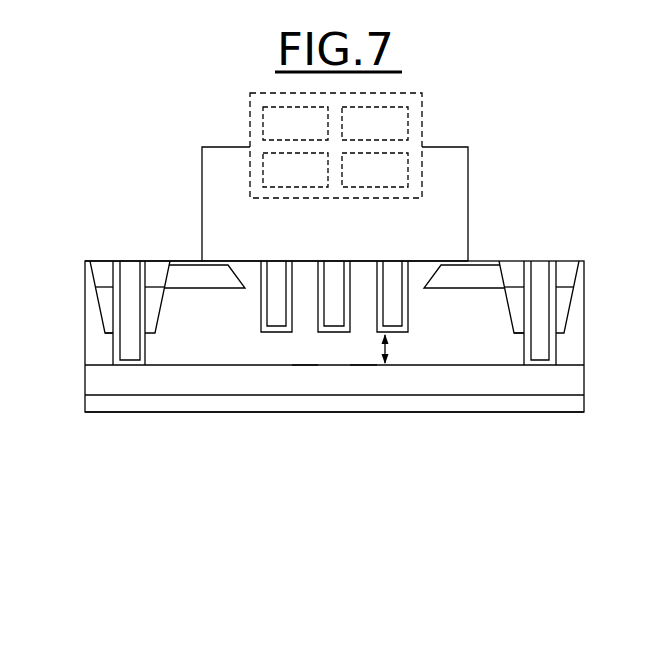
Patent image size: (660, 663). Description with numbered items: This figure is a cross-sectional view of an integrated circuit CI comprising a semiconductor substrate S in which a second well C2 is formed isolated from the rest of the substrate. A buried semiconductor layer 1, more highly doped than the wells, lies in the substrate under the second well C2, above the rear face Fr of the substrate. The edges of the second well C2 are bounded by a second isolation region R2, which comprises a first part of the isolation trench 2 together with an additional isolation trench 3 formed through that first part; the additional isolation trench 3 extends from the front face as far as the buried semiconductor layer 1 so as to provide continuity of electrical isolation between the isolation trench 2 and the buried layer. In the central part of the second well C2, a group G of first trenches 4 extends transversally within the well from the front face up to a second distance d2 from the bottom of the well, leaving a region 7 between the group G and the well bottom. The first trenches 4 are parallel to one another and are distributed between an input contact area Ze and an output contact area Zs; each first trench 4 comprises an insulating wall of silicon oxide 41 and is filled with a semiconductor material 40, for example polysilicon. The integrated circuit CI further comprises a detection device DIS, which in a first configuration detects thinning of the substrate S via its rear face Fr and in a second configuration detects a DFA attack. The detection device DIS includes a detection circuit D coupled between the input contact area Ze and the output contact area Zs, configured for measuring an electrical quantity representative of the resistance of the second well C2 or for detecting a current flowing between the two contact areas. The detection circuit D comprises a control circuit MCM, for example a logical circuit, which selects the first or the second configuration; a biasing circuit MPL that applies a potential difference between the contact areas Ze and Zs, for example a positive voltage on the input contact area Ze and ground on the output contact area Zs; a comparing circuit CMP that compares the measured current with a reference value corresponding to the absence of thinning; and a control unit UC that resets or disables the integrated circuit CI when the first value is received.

The buried semiconductor layer 1 is at (150, 380).
The isolation trench 2 is at (334, 297).
The additional isolation trench 3 is at (130, 251).
The first trenches 4 is at (329, 349).
The region 7 is at (298, 351).
The semiconductor material 40 is at (275, 318).
The silicon oxide 41 is at (262, 303).
The second isolation region R2 is at (108, 346).
The semiconductor substrate S is at (28, 0).
The input contact area Ze is at (192, 251).
The output contact area Zs is at (478, 254).
The second well C2 is at (215, 305).
The group of at least a first trench G is at (413, 225).
The detection circuit D is at (360, 145).
The detection device DIS is at (189, 164).
The integrated circuit CI is at (388, 117).
The rear face Fr is at (333, 412).
The second distance d2 is at (380, 346).
The biasing circuit MPL is at (295, 123).
The control circuit MCM is at (375, 123).
The comparing circuit CMP is at (295, 170).
The control unit UC is at (375, 170).